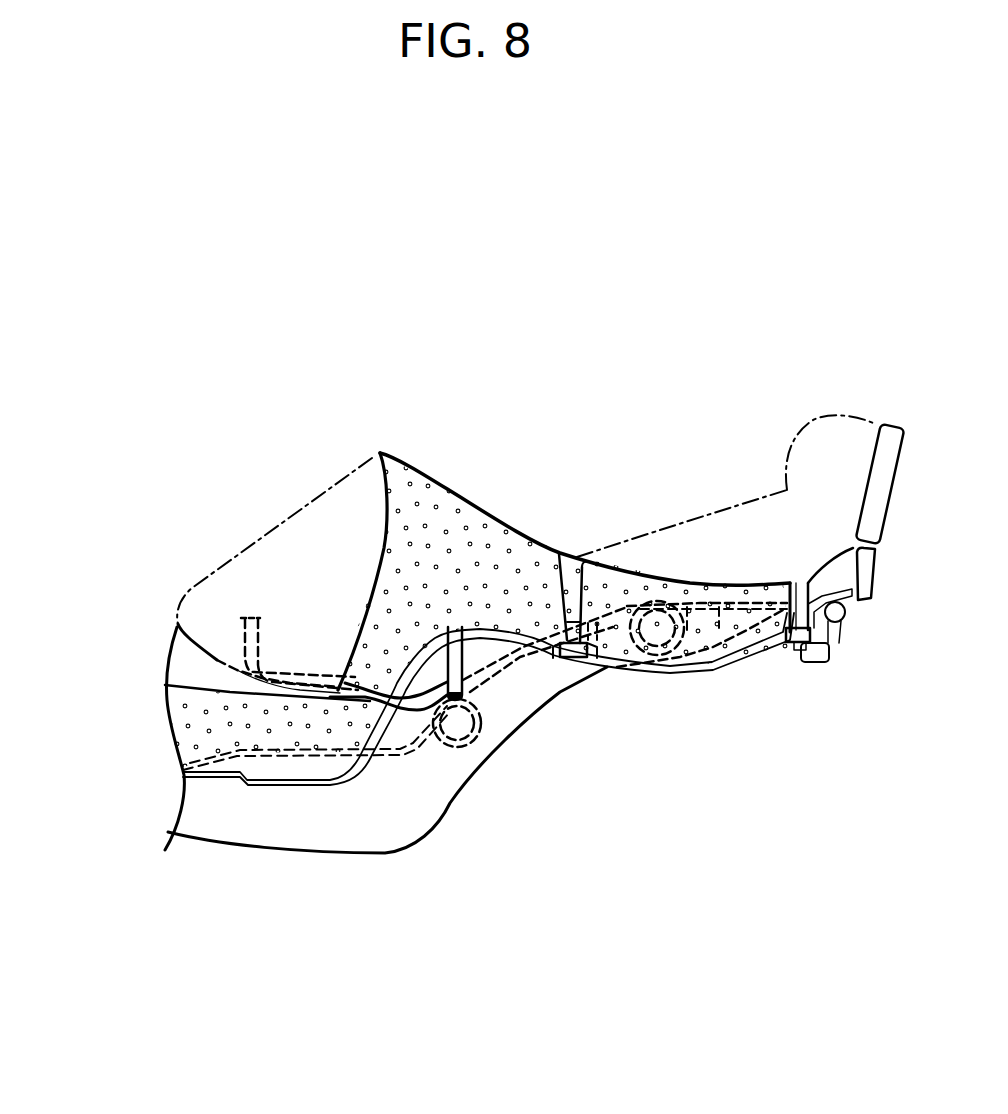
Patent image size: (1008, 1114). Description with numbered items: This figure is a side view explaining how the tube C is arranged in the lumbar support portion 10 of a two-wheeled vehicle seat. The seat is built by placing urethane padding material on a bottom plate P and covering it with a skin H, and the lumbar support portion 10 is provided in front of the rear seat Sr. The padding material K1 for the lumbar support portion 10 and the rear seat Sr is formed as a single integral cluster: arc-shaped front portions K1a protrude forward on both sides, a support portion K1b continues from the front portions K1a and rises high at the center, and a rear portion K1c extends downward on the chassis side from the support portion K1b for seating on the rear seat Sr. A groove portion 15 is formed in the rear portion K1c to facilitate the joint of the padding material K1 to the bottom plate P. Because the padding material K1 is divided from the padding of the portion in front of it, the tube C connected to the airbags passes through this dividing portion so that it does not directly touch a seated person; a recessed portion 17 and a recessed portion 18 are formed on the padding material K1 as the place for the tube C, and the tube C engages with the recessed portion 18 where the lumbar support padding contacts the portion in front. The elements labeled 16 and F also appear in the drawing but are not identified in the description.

The lumbar support portion 10 is at (253, 515).
The groove portion 15 is at (572, 573).
The seat cushion side portion 16 is at (177, 627).
The recessed portion 17 is at (237, 670).
The recessed portion 18 is at (467, 667).
The padding material K1 is at (517, 280).
The front portions K1a is at (307, 493).
The support portion K1b is at (405, 480).
The rear portion K1c is at (605, 580).
The skin H is at (447, 486).
The rear seat Sr is at (662, 500).
The bottom plate P is at (710, 605).
The tube C is at (252, 615).
The frame F is at (480, 730).